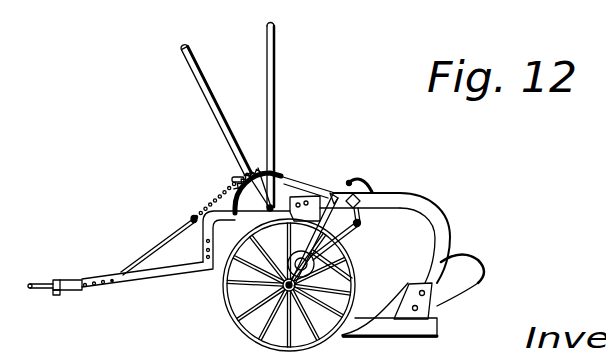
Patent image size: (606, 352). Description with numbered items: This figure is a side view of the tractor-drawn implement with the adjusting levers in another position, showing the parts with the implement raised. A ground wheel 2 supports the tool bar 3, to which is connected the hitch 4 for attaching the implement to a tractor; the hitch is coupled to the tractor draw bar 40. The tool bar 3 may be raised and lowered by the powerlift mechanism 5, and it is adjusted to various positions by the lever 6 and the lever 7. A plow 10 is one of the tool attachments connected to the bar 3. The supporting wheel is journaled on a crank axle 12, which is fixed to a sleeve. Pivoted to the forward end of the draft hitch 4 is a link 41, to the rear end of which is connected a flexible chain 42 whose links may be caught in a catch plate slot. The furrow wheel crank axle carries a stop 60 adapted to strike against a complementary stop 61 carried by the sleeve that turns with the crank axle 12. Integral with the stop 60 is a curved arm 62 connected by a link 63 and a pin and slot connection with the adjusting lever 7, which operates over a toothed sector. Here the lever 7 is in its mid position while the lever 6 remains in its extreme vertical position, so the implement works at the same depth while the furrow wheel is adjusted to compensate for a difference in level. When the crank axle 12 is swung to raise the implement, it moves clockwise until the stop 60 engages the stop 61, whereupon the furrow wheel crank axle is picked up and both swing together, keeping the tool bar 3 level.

The ground wheel 2 is at (223, 311).
The tool bar 3 is at (361, 197).
The hitch 4 is at (157, 270).
The powerlift mechanism 5 is at (313, 275).
The lever 6 is at (275, 108).
The lever 7 is at (218, 110).
The plow 10 is at (467, 287).
The crank axle 12 is at (352, 264).
The tractor draw bar 40 is at (33, 282).
The link 41 is at (153, 250).
The flexible chain 42 is at (208, 208).
The stop 60 is at (348, 248).
The stop 61 is at (362, 228).
The curved arm 62 is at (360, 181).
The link 63 is at (323, 190).